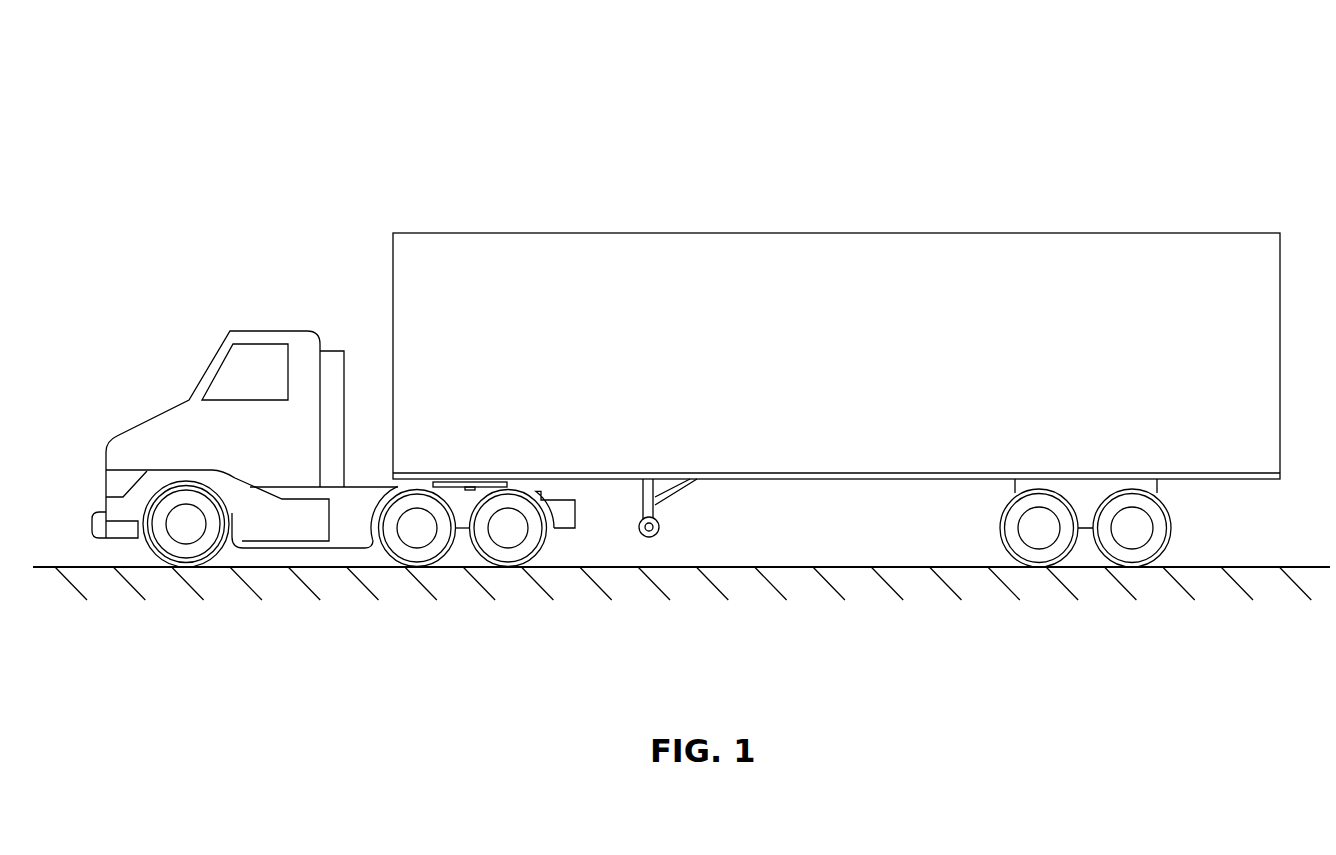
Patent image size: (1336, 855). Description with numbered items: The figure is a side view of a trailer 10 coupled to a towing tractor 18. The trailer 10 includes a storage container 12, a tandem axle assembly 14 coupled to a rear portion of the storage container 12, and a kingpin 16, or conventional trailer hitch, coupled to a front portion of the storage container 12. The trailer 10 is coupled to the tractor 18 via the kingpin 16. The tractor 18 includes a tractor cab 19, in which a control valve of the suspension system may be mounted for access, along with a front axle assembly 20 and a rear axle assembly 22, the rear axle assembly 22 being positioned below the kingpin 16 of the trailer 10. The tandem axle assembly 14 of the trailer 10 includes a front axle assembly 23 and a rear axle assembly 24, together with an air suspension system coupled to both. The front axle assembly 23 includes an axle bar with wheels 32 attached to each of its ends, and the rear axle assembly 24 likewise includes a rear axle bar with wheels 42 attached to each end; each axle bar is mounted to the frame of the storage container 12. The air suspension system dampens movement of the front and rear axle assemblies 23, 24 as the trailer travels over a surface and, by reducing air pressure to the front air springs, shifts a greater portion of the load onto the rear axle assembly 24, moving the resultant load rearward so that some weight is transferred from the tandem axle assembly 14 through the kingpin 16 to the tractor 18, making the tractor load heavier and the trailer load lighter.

The trailer 10 is at (542, 204).
The storage container 12 is at (768, 258).
The tandem axle assembly 14 is at (981, 530).
The kingpin 16 is at (470, 490).
The tractor 18 is at (176, 354).
The tractor cab 19 is at (304, 347).
The front axle assembly 20 is at (185, 548).
The rear axle assembly 22 is at (412, 568).
The front axle assembly 23 is at (1042, 568).
The rear axle assembly 24 is at (1177, 540).
The wheels 32 is at (1012, 537).
The wheels 42 is at (1160, 526).